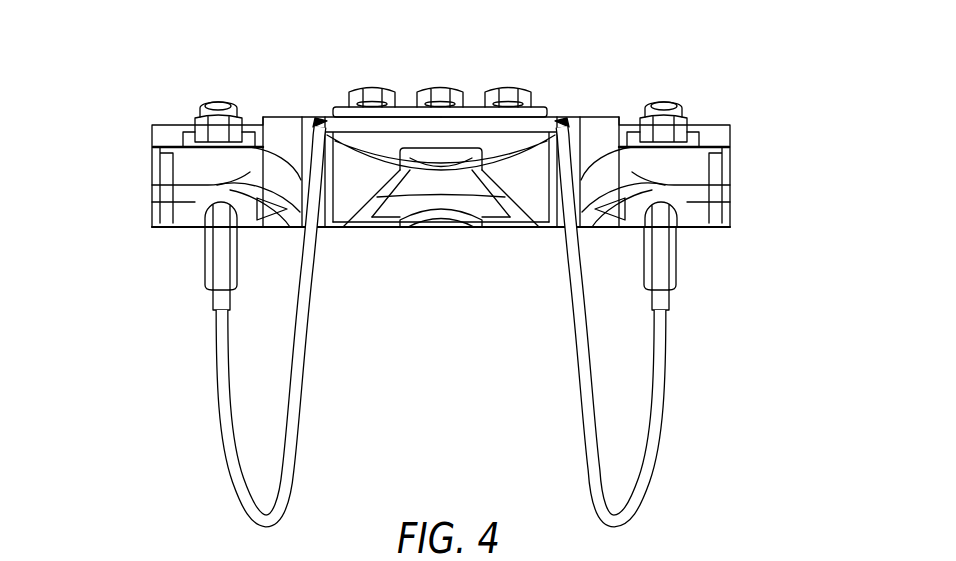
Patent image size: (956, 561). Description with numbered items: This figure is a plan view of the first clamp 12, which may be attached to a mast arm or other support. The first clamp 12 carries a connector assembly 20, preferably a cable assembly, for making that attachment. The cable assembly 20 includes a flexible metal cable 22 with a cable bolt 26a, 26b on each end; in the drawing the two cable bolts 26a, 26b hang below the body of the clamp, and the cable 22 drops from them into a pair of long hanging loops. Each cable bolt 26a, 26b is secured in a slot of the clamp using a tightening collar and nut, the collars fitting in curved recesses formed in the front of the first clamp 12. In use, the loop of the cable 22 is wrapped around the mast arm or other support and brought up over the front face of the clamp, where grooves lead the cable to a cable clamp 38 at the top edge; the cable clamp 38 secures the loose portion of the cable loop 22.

The first clamp 12 is at (461, 285).
The connector assembly 20 is at (645, 495).
The flexible metal cable 22 is at (522, 155).
The cable bolt 26a is at (662, 267).
The cable bolt 26b is at (215, 265).
The cable clamp 38 is at (338, 104).